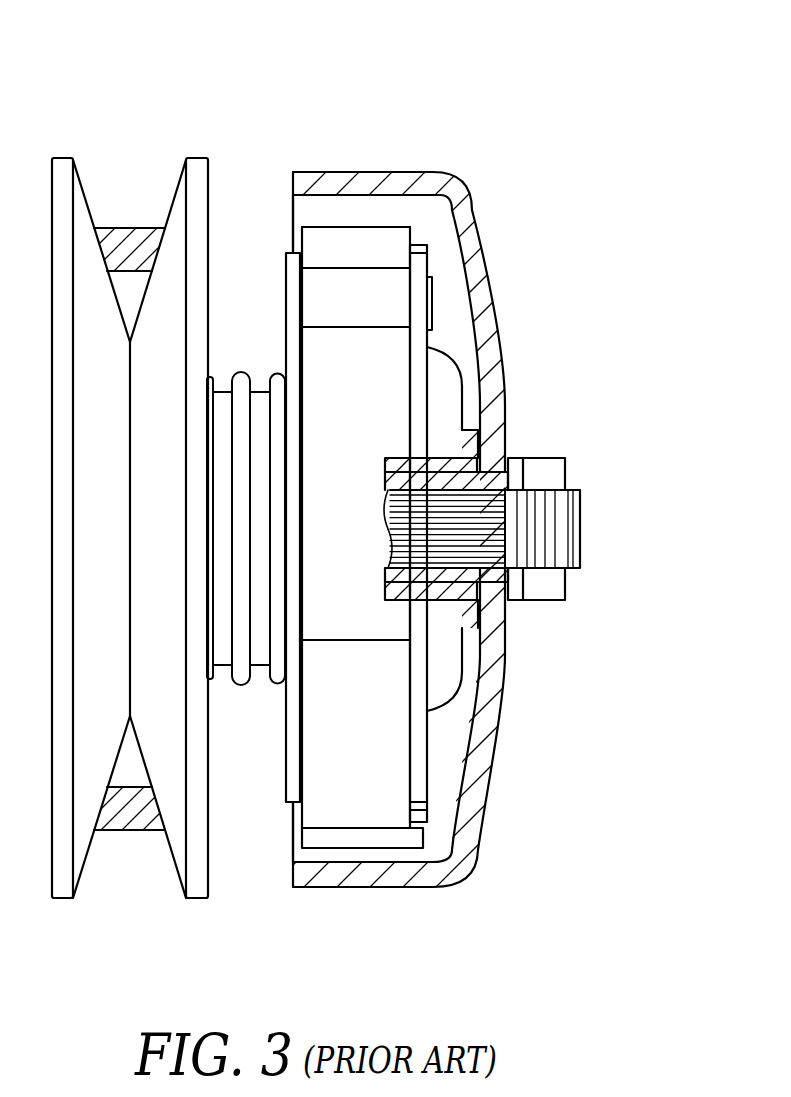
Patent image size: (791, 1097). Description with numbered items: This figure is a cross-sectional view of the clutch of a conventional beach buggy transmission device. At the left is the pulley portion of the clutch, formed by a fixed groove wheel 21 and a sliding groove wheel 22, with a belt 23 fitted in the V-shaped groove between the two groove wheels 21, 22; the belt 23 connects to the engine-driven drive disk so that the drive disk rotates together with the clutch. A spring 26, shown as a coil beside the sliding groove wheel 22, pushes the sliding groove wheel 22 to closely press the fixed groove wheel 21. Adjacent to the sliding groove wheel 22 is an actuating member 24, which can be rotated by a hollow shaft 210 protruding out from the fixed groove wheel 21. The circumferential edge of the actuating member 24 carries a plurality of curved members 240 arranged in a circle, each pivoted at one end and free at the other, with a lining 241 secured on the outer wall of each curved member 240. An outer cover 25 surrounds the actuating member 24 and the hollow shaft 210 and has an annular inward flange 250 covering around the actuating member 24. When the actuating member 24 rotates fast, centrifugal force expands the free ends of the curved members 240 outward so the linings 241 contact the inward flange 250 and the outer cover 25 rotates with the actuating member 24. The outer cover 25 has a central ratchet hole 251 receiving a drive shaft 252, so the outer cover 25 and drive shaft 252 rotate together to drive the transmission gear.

The fixed groove wheel 21 is at (63, 172).
The sliding groove wheel 22 is at (198, 178).
The belt 23 is at (132, 235).
The actuating member 24 is at (365, 810).
The outer cover 25 is at (482, 732).
The spring 26 is at (240, 388).
The hollow shaft 210 is at (437, 593).
The curved member 240 is at (395, 378).
The lining 241 is at (388, 227).
The annular inward flange 250 is at (370, 183).
The ratchet hole 251 is at (483, 472).
The drive shaft 252 is at (482, 527).